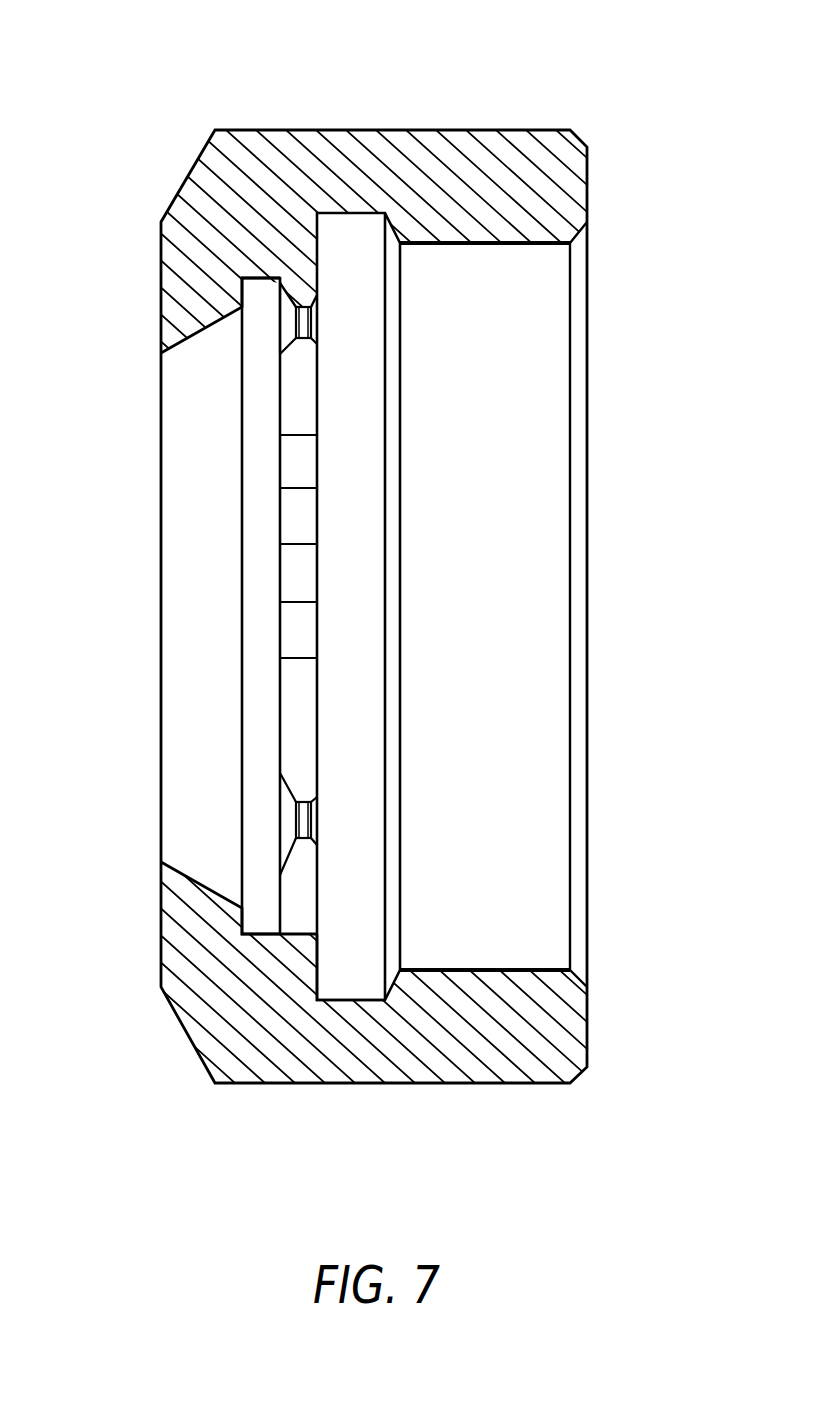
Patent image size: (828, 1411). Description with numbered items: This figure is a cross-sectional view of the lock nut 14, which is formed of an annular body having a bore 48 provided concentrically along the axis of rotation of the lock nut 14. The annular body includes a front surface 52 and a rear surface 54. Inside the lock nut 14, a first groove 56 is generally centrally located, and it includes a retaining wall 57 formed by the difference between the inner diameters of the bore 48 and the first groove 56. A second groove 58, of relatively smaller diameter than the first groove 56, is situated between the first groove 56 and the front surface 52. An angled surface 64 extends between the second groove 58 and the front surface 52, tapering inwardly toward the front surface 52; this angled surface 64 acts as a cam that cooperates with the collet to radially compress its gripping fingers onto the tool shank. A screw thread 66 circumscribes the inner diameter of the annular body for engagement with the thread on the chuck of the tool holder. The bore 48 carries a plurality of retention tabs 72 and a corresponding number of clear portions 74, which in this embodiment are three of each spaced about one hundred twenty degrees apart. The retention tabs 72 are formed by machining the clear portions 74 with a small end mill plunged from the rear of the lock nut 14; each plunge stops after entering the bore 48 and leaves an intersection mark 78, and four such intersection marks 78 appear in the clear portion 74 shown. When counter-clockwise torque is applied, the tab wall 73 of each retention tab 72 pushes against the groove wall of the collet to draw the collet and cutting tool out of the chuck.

The lock nut 14 is at (420, 114).
The bore 48 is at (300, 305).
The front surface 52 is at (161, 932).
The rear surface 54 is at (587, 1018).
The first groove 56 is at (340, 212).
The retaining wall 57 is at (320, 960).
The second groove 58 is at (244, 276).
The angled surface 64 is at (161, 305).
The screw thread 66 is at (463, 235).
The retention tab 72 is at (298, 283).
The tab wall 73 is at (280, 293).
The clear portion 74 is at (297, 627).
The intersection mark 78 is at (318, 543).